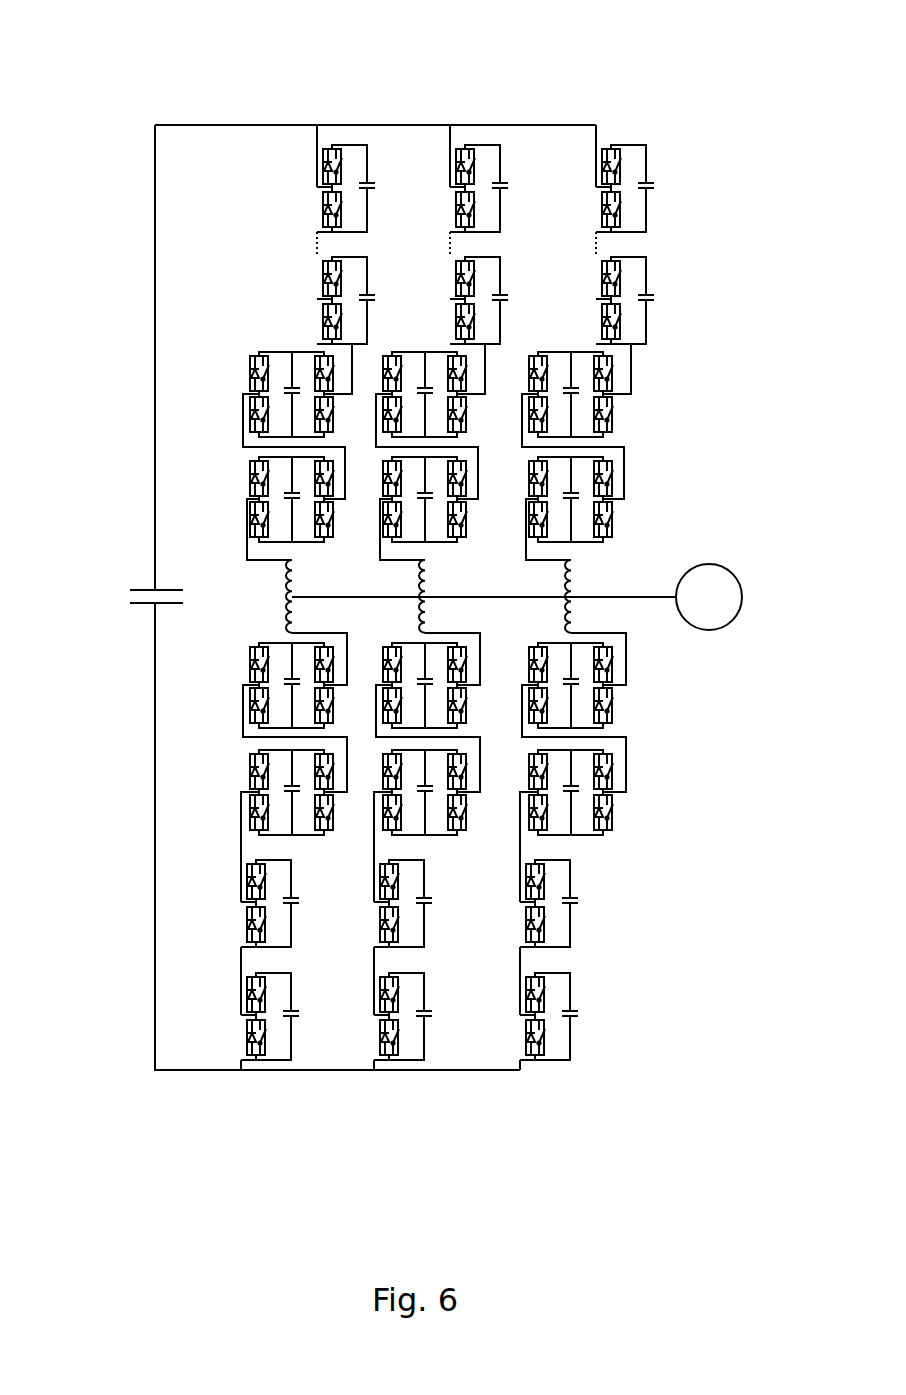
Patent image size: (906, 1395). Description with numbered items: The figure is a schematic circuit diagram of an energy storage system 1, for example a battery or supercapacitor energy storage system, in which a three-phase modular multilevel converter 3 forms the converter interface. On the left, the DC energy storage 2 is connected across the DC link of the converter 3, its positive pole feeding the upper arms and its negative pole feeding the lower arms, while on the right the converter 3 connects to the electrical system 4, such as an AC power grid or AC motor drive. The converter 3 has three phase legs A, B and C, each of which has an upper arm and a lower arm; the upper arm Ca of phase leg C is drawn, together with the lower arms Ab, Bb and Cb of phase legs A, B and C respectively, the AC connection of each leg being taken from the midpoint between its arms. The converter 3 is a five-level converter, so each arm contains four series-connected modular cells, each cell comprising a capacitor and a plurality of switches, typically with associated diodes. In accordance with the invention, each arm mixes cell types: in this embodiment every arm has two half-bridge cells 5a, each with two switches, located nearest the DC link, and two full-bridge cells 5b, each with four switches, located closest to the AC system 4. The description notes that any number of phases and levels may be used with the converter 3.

The energy storage system 1 is at (122, 106).
The energy storage 2 is at (101, 648).
The modular multilevel converter 3 is at (620, 106).
The electrical system 4 is at (743, 597).
The half-bridge cell 5a is at (669, 540).
The full-bridge cell 5b is at (633, 551).
The upper arm of phase leg C Ca is at (256, 324).
The lower arm of phase leg C Cb is at (220, 841).
The lower arm of phase leg B Bb is at (385, 851).
The lower arm of phase leg A Ab is at (527, 851).
The phase leg A is at (540, 1080).
The phase leg B is at (400, 1080).
The phase leg C is at (265, 1080).